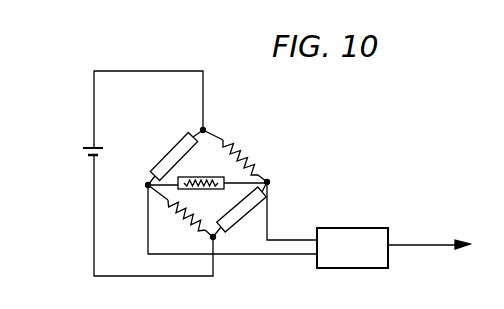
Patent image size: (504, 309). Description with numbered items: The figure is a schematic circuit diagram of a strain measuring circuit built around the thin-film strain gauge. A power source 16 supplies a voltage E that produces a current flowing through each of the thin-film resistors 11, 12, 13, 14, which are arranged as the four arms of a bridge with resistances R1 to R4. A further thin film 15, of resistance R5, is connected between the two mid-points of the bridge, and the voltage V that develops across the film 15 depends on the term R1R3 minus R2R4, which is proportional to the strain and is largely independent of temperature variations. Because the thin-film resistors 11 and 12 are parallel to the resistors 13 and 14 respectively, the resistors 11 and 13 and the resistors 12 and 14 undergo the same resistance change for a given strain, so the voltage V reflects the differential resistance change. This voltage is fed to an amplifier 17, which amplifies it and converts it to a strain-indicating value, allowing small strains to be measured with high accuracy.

The thin-film resistor 11 is at (174, 153).
The thin-film resistor 12 is at (243, 151).
The thin-film resistor 13 is at (247, 218).
The thin-film resistor 14 is at (188, 218).
The thin film 15 is at (195, 178).
The power source 16 is at (81, 149).
The amplifier 17 is at (346, 237).